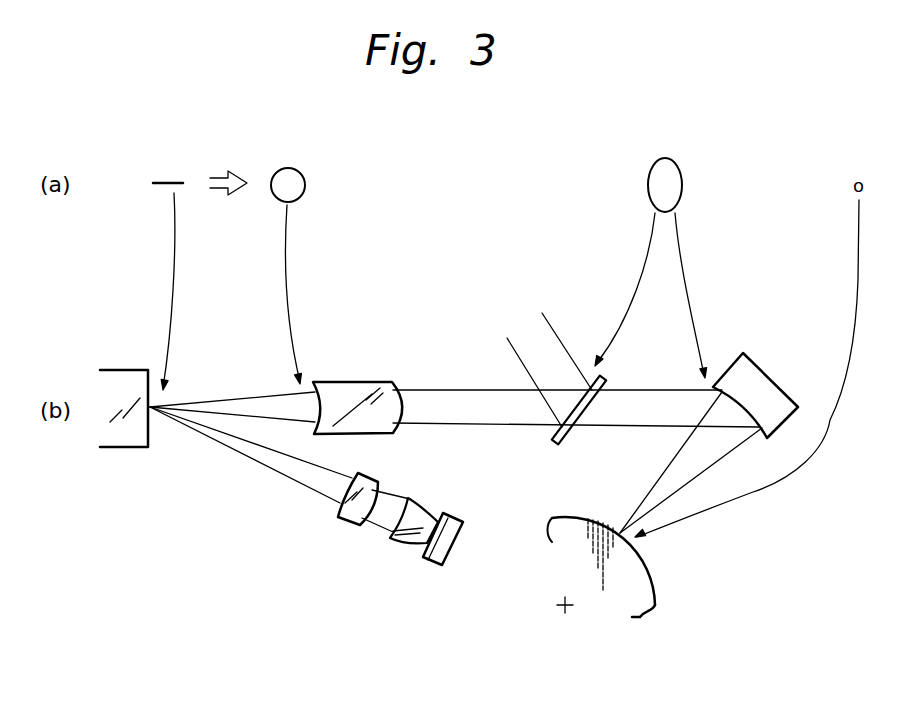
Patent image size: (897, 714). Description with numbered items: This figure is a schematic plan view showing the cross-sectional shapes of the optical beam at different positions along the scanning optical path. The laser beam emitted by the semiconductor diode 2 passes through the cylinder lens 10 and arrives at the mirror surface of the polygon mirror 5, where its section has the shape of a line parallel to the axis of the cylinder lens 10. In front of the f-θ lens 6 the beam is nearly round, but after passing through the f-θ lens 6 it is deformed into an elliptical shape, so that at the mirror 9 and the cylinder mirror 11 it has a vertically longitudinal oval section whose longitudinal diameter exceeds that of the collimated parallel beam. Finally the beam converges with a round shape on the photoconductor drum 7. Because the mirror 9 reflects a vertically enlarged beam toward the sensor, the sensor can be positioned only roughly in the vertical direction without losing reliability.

The semiconductor diode 2 is at (458, 538).
The polygon mirror 5 is at (127, 448).
The f-θ lens 6 is at (393, 435).
The photoconductor drum 7 is at (585, 517).
The mirror 9 is at (607, 379).
The cylinder lens 10 is at (347, 525).
The cylinder mirror 11 is at (782, 382).